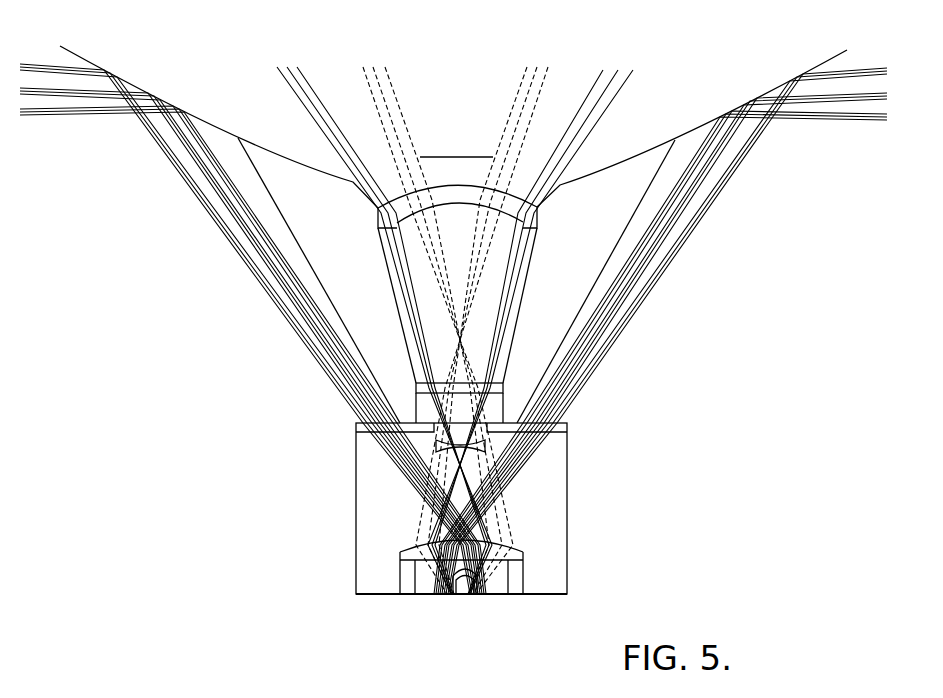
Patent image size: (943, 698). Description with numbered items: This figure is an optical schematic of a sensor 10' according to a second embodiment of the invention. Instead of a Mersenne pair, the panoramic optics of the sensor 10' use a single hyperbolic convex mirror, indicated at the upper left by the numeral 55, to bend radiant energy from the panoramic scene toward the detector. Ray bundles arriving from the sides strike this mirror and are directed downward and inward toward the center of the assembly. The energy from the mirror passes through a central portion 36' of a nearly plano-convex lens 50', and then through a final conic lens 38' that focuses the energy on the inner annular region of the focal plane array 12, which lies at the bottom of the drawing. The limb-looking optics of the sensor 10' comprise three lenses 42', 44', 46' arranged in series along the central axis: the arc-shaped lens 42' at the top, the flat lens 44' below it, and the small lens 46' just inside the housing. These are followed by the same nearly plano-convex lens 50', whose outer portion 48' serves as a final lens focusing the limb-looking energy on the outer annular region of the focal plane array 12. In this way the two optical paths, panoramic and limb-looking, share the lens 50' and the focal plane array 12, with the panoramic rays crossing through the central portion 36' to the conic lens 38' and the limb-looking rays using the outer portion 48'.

The reflector 55 is at (60, 46).
The sensor 10' is at (505, 322).
The lens 42' is at (457, 235).
The lens 44' is at (531, 394).
The lens 46' is at (540, 444).
The outer portion 48' is at (403, 545).
The central portion 36' is at (555, 545).
The nearly plano-convex lens 50' is at (597, 559).
The focal plane array 12 is at (432, 596).
The final conic lens 38' is at (489, 605).